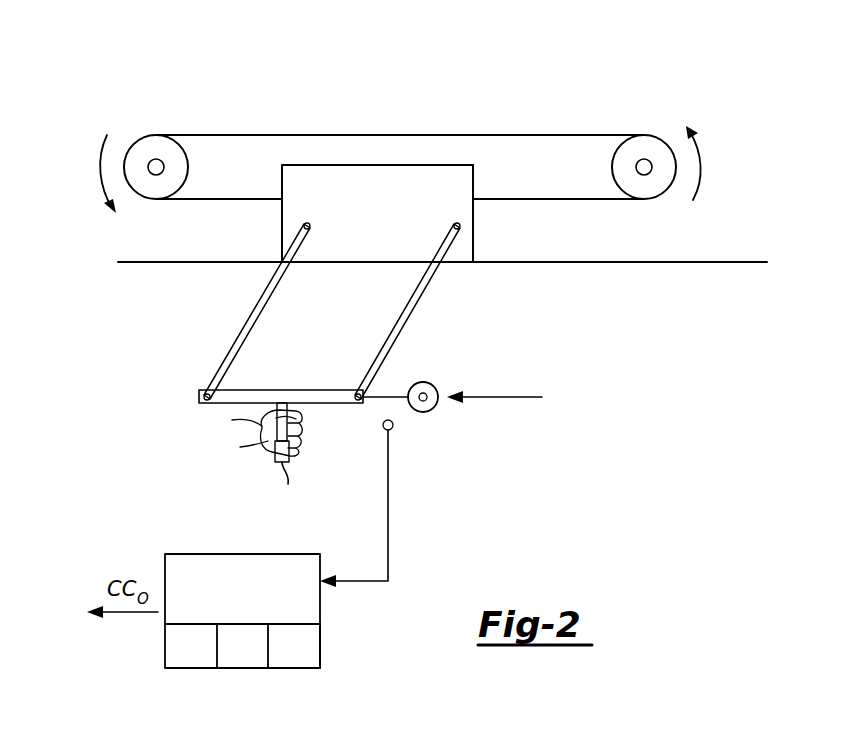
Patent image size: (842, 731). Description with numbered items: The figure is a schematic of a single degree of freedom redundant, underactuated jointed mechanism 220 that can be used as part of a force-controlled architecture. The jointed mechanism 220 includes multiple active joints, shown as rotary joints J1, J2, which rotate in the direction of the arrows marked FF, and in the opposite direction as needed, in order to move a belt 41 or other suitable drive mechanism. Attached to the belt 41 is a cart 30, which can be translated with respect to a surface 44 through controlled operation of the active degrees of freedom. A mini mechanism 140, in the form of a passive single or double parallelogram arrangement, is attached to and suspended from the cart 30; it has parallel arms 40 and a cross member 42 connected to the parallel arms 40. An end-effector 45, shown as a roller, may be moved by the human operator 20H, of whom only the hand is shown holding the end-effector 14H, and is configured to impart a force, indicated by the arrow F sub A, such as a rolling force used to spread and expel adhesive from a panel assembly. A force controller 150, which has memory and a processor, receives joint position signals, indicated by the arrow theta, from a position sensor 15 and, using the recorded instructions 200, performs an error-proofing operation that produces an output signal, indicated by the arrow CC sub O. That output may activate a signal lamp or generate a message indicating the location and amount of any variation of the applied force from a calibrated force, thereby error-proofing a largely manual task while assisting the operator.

The jointed mechanism 220 is at (722, 106).
The belt 41 is at (400, 135).
The rotary joint J1 is at (157, 146).
The rotary joint J2 is at (645, 146).
The cart 30 is at (473, 178).
The surface 44 is at (737, 261).
The mini mechanism 140 is at (168, 360).
The parallel arms 40 is at (265, 305).
The cross member 42 is at (277, 390).
The end-effector 45 is at (427, 383).
The end-effector 14H is at (291, 459).
The human operator 20H is at (258, 433).
The position sensor 15 is at (374, 502).
The force controller 150 is at (243, 553).
The recorded instructions 200 is at (294, 646).